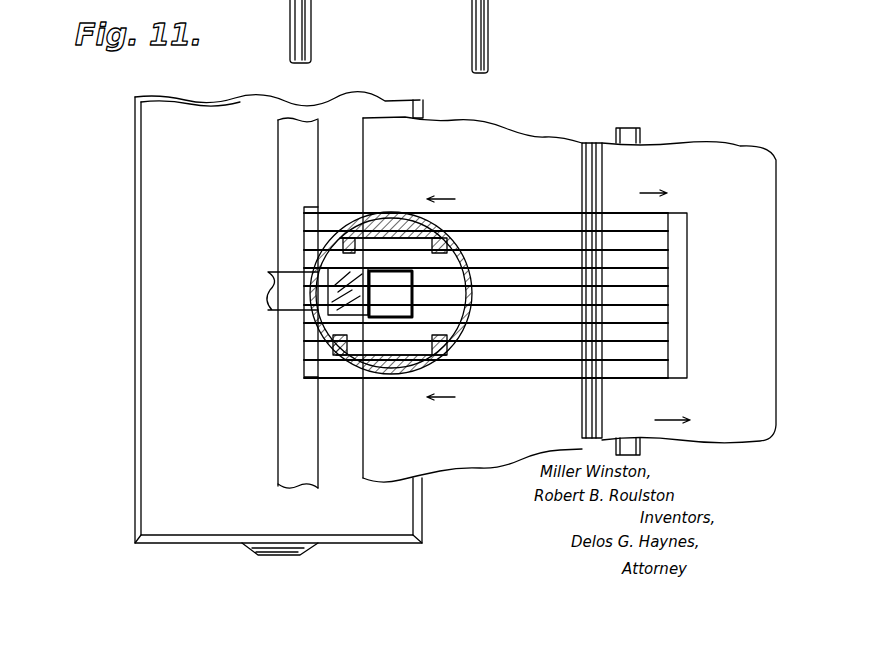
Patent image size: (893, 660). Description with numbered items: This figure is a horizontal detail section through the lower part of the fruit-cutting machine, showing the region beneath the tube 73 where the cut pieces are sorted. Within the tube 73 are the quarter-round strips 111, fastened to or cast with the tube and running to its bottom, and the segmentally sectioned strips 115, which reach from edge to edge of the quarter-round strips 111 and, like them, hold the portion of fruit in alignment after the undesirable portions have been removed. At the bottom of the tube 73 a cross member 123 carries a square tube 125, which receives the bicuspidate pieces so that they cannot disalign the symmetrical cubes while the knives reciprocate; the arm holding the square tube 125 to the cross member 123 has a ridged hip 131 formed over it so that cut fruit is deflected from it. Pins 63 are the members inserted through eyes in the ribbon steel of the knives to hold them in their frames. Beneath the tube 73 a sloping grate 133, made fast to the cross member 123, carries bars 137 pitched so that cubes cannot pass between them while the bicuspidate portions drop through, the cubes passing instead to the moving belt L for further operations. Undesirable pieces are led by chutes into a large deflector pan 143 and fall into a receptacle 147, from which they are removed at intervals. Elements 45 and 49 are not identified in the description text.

The pin 45 is at (290, 3).
The pin 49 is at (488, 20).
The pins 63 is at (390, 9).
The tube 73 is at (318, 326).
The quarter-round strips 111 is at (442, 235).
The segmentally sectioned strips 115 is at (389, 216).
The cross member 123 is at (283, 459).
The square tube 125 is at (394, 266).
The ridged hip 131 is at (345, 267).
The sloping grate 133 is at (508, 381).
The bars 137 is at (490, 247).
The deflector pan 143 is at (536, 150).
The receptacle 147 is at (152, 503).
The moving belt L is at (716, 150).